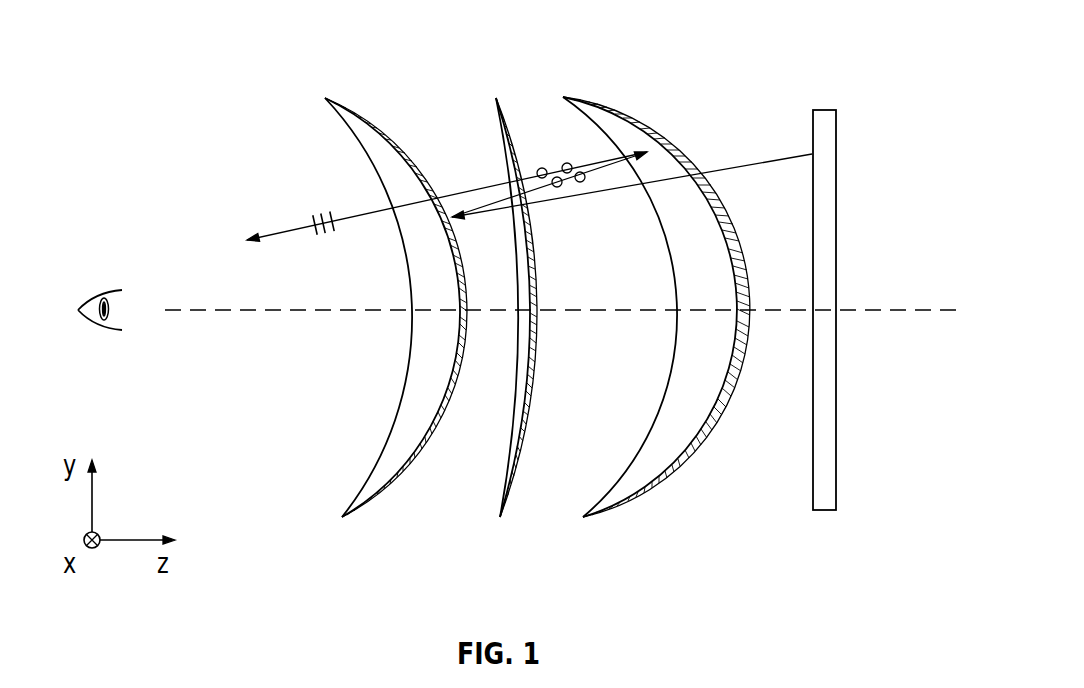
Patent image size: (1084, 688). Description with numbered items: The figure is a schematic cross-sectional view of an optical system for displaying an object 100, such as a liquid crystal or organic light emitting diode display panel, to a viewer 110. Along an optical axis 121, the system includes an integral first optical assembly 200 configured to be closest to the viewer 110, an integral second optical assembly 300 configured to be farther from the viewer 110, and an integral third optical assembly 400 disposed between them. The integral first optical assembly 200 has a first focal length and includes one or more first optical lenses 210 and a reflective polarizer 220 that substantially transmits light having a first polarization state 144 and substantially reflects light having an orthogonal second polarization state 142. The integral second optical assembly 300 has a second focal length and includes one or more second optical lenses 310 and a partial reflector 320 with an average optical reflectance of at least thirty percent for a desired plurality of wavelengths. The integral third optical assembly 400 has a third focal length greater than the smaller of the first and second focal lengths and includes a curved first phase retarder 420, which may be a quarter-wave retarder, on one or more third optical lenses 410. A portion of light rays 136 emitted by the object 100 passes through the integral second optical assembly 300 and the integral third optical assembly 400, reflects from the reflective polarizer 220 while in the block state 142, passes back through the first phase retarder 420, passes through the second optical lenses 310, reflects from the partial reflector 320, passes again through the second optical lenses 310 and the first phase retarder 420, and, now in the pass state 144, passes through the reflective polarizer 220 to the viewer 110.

The object 100 is at (830, 110).
The viewer 110 is at (118, 270).
The optical axis 121 is at (890, 310).
The light rays 136 is at (758, 162).
The polarization state 142 is at (563, 164).
The polarization state 144 is at (310, 219).
The integral first optical assembly 200 is at (368, 72).
The first optical lenses 210 is at (362, 488).
The reflective polarizer 220 is at (388, 485).
The integral second optical assembly 300 is at (623, 72).
The second optical lenses 310 is at (615, 488).
The partial reflector 320 is at (683, 462).
The integral third optical assembly 400 is at (512, 72).
The third optical lenses 410 is at (511, 438).
The first phase retarder 420 is at (512, 483).